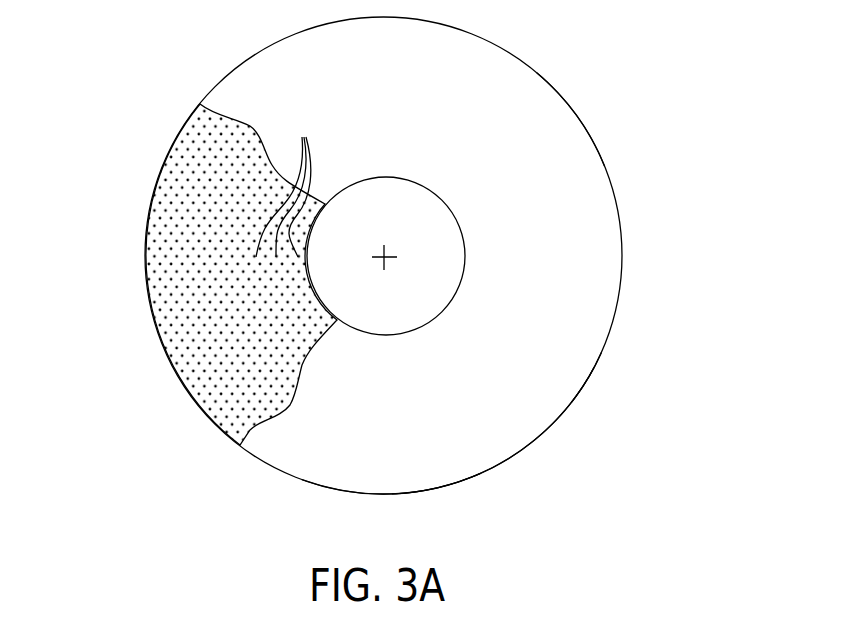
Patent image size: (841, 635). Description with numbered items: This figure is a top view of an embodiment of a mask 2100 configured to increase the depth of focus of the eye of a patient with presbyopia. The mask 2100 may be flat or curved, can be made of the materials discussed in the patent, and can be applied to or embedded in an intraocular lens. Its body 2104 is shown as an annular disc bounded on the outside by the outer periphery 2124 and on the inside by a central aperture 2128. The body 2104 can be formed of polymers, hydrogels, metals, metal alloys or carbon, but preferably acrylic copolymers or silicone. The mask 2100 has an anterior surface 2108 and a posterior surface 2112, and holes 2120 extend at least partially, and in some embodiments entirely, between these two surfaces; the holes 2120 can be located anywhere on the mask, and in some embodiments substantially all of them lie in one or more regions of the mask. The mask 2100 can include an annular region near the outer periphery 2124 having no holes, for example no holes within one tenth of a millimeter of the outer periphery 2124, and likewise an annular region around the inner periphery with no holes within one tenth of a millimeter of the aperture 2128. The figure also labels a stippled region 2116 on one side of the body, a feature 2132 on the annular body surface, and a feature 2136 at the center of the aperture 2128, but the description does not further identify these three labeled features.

The mask 2100 is at (619, 76).
The body 2104 is at (500, 432).
The anterior surface 2108 is at (462, 460).
The posterior surface 2112 is at (592, 340).
The textured adhesive region 2116 is at (164, 218).
The holes 2120 is at (294, 184).
The outer periphery 2124 is at (605, 164).
The aperture 2128 is at (437, 291).
The annular body surface 2132 is at (425, 420).
The center point 2136 is at (386, 253).